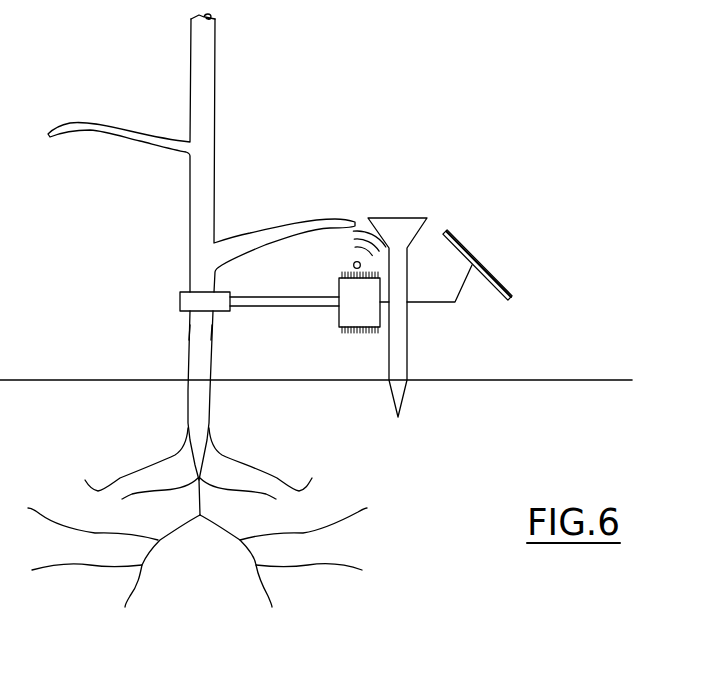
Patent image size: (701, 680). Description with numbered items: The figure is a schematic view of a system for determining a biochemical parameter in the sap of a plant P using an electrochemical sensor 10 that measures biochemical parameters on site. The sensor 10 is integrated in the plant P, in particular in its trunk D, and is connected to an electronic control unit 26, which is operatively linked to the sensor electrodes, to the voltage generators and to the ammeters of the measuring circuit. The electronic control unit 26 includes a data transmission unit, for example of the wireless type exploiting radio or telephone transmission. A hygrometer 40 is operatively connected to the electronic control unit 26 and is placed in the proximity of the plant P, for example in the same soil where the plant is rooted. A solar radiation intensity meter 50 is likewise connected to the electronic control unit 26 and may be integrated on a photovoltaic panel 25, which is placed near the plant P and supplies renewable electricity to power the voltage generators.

The plant P is at (215, 45).
The electrochemical sensor 10 is at (174, 303).
The trunk D is at (200, 331).
The electronic control unit 26 is at (357, 314).
The hygrometer 40 is at (407, 213).
The solar radiation intensity meter 50 is at (450, 231).
The photovoltaic panel 25 is at (497, 277).